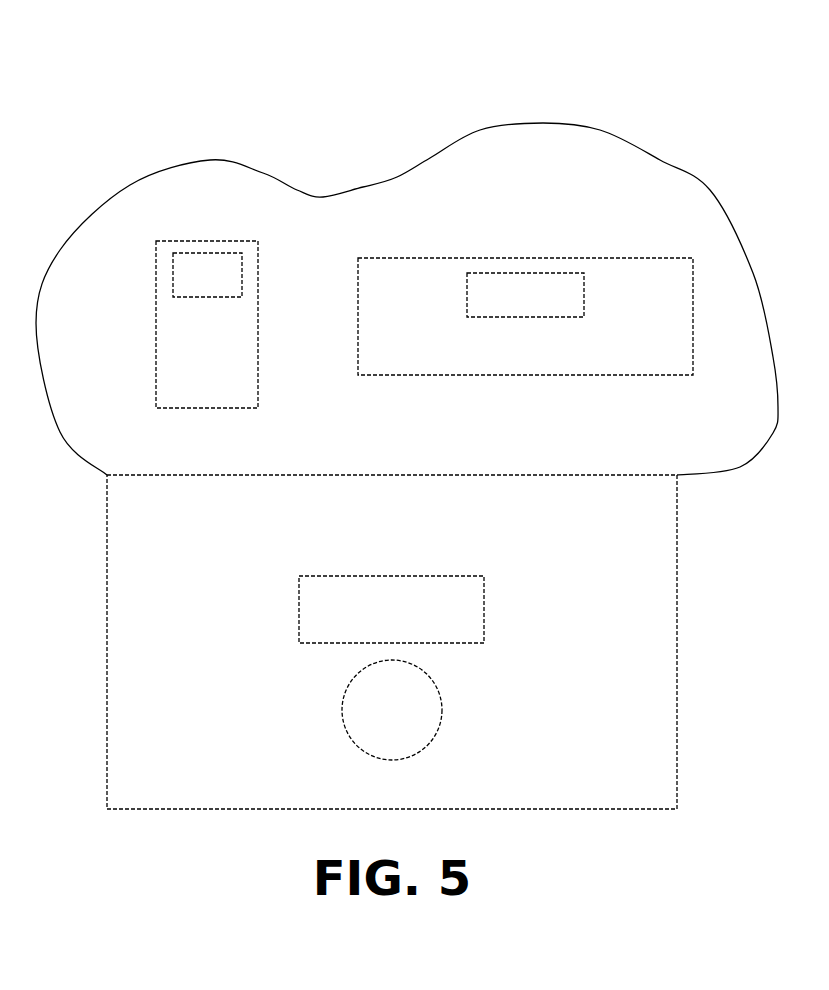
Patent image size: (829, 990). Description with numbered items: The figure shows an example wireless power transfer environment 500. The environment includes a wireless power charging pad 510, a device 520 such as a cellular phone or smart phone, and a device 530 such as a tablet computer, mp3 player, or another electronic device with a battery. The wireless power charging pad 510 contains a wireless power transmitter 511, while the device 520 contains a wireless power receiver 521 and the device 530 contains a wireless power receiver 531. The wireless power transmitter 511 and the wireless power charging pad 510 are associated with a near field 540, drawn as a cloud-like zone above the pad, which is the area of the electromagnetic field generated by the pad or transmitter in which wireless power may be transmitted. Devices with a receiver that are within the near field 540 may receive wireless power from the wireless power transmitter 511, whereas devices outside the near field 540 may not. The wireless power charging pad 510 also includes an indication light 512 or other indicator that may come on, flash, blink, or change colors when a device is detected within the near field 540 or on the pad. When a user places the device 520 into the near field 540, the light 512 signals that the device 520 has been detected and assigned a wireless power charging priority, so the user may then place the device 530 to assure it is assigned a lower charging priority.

The wireless power transfer environment 500 is at (636, 62).
The wireless power charging pad 510 is at (373, 529).
The wireless power transmitter 511 is at (373, 623).
The indication light 512 is at (373, 721).
The device 520 is at (188, 384).
The wireless power receiver 521 is at (188, 284).
The device 530 is at (506, 354).
The wireless power receiver 531 is at (506, 308).
The near field 540 is at (205, 159).